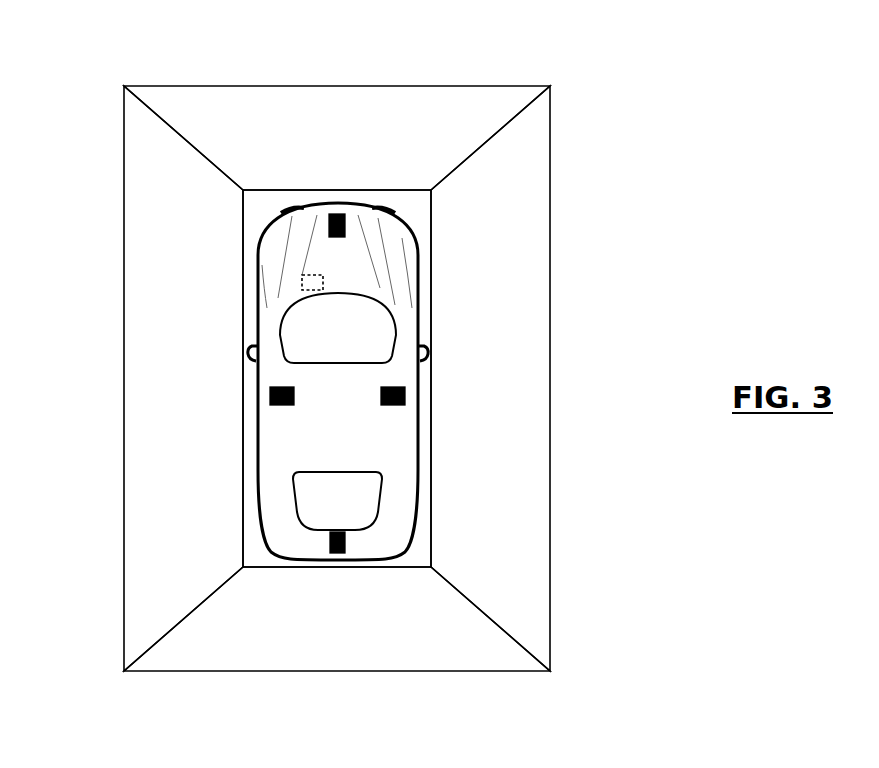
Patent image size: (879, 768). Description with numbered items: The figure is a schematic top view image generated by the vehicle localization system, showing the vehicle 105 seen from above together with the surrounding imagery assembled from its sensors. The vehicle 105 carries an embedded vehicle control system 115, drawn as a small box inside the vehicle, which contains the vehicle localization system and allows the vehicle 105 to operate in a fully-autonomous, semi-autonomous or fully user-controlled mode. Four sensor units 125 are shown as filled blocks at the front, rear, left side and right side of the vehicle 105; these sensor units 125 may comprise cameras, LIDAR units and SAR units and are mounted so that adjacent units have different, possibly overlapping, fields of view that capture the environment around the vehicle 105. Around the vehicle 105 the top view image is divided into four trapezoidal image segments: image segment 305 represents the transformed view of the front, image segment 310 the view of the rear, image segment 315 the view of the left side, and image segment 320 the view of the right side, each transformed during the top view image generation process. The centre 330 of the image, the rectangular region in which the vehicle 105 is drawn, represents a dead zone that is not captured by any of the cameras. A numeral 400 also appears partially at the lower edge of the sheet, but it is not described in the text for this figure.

The vehicle 105 is at (408, 240).
The vehicle control system 115 is at (303, 276).
The sensor units 125 is at (338, 212).
The image segment 305 is at (313, 113).
The image segment 310 is at (343, 652).
The image segment 315 is at (137, 186).
The image segment 320 is at (527, 184).
The centre of the image 330 is at (431, 311).
The process (adjacent figure) 400 is at (150, 765).